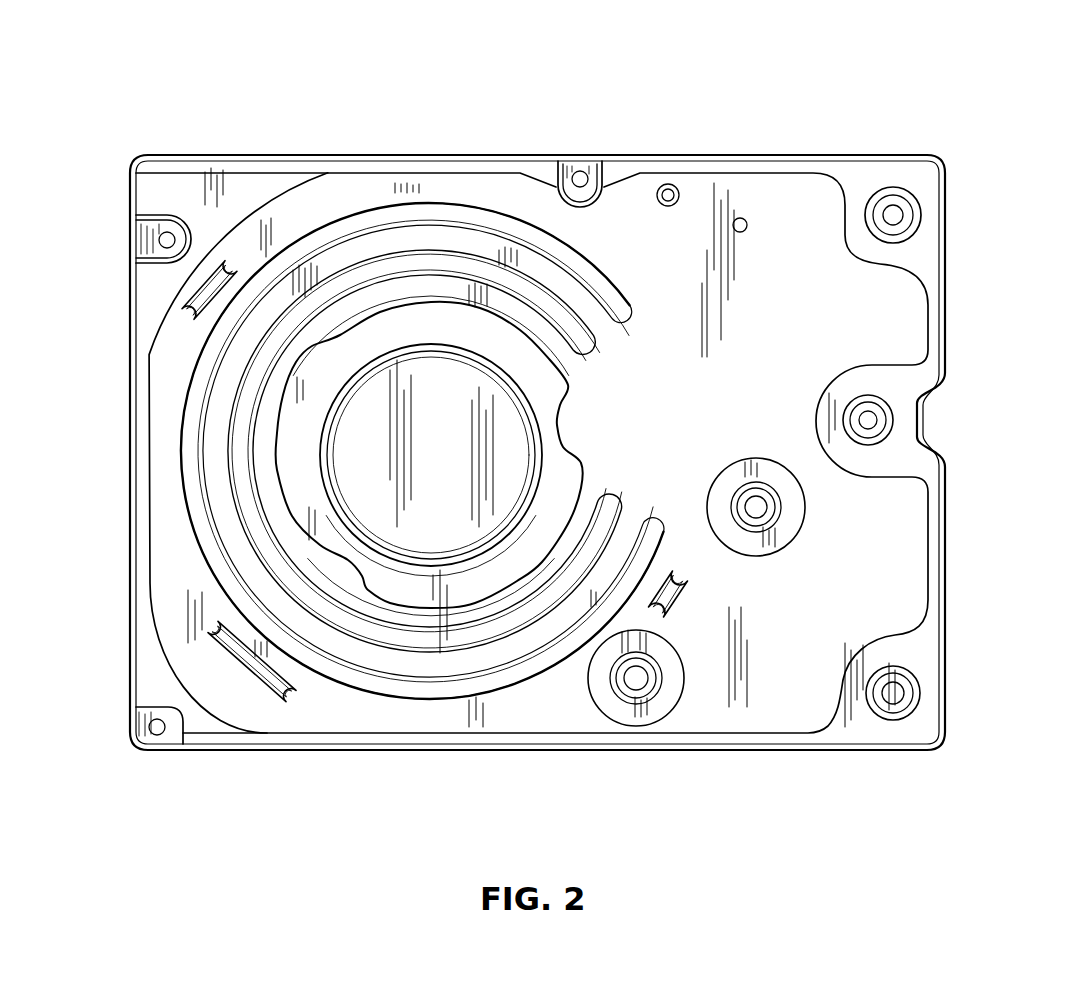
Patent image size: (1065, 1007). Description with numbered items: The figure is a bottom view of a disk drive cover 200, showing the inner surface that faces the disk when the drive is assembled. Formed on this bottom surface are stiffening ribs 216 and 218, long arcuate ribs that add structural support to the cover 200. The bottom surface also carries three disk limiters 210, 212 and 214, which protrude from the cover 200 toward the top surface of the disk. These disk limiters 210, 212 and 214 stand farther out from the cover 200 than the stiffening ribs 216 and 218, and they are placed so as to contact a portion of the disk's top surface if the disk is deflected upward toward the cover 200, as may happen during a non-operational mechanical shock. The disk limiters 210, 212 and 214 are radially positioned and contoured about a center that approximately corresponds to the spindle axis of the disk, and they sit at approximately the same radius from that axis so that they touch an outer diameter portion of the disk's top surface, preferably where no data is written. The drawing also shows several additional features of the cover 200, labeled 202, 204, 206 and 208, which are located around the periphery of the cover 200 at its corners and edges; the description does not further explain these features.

The cover 200 is at (779, 147).
The mounting boss 202 is at (905, 215).
The mounting tab 204 is at (587, 162).
The mounting tab 206 is at (160, 243).
The mounting tab 208 is at (156, 736).
The disk limiter 210 is at (261, 690).
The disk limiter 212 is at (190, 306).
The disk limiter 214 is at (675, 586).
The stiffening rib 216 is at (630, 313).
The stiffening rib 218 is at (592, 346).